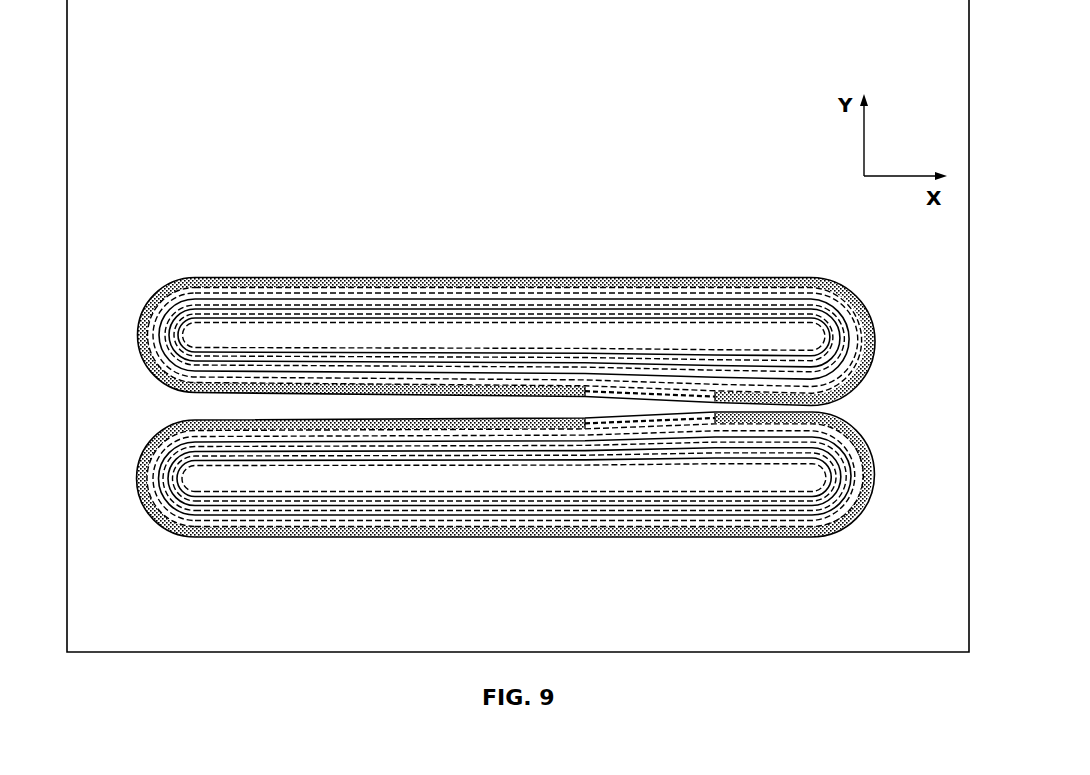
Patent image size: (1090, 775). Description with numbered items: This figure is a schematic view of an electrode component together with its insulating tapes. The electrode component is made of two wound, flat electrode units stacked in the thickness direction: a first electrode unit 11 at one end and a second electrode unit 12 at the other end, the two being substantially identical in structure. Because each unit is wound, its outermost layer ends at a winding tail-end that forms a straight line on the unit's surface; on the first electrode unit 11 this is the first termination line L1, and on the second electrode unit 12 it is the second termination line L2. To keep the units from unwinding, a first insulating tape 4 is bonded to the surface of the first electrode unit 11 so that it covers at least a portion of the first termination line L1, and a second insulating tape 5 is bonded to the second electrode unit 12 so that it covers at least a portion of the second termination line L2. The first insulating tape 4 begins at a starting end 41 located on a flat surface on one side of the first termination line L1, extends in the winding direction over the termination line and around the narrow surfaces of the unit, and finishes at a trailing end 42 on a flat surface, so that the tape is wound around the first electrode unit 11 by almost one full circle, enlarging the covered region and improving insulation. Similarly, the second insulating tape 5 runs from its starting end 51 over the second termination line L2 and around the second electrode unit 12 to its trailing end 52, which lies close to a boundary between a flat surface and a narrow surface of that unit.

The first insulating tape 4 is at (145, 279).
The second insulating tape 5 is at (156, 559).
The first electrode unit 11 is at (884, 331).
The second electrode unit 12 is at (890, 474).
The starting end 41 is at (585, 393).
The trailing end 42 is at (713, 397).
The starting end 51 is at (588, 421).
The trailing end 52 is at (713, 420).
The first termination line L1 is at (500, 384).
The second termination line L2 is at (502, 433).